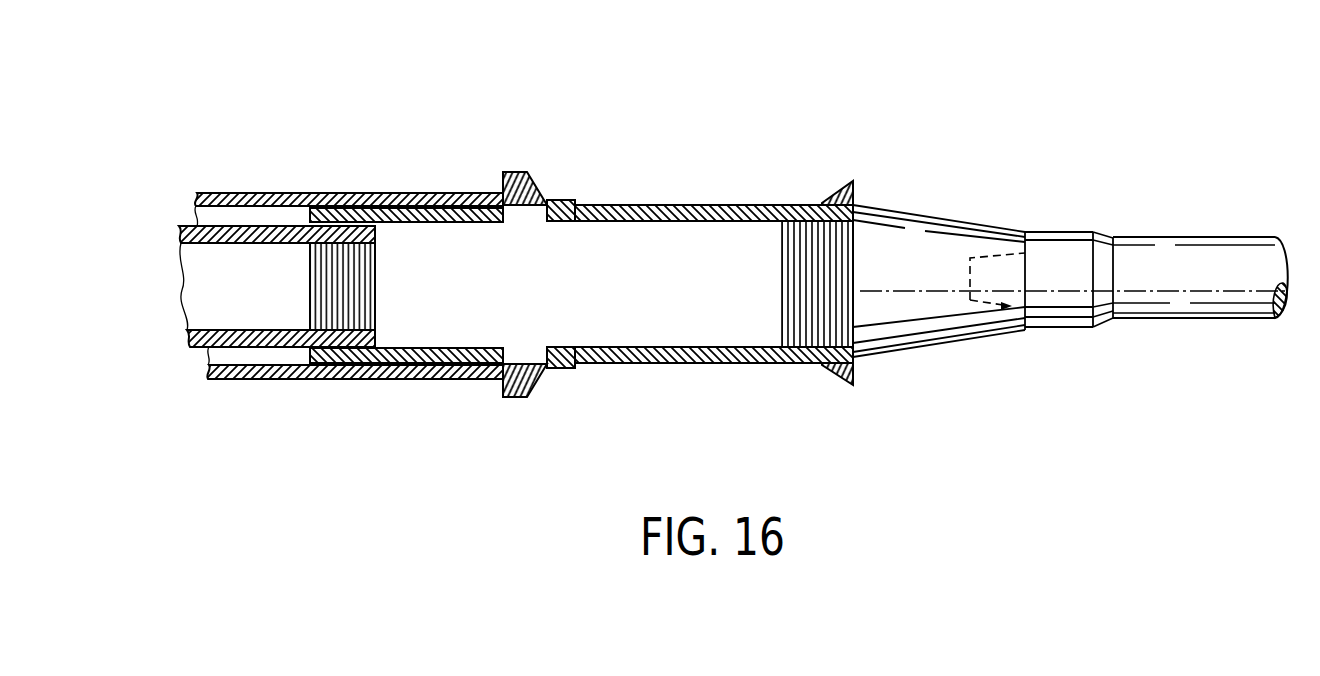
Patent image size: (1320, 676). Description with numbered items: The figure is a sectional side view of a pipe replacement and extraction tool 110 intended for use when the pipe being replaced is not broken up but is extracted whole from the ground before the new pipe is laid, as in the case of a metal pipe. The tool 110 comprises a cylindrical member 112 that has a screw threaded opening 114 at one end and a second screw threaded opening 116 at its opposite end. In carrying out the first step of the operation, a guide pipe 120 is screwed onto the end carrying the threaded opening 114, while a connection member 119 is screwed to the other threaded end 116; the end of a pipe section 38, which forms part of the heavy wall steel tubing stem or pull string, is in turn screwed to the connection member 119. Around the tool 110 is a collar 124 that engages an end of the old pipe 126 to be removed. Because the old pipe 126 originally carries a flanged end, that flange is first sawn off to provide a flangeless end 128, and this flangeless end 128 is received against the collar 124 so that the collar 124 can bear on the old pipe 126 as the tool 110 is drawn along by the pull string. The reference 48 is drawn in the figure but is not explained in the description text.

The tool 110 is at (589, 108).
The cylindrical member 112 is at (682, 364).
The screw threaded opening 114 is at (310, 295).
The screw threaded opening 116 is at (847, 325).
The connection member 119 is at (920, 235).
The guide pipe 120 is at (248, 348).
The collar 124 is at (512, 172).
The old pipe 126 is at (337, 364).
The flangeless end 128 is at (495, 378).
The valve 48 is at (1003, 268).
The pipe section 38 is at (1197, 245).